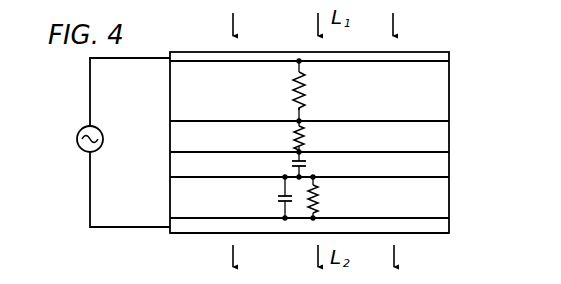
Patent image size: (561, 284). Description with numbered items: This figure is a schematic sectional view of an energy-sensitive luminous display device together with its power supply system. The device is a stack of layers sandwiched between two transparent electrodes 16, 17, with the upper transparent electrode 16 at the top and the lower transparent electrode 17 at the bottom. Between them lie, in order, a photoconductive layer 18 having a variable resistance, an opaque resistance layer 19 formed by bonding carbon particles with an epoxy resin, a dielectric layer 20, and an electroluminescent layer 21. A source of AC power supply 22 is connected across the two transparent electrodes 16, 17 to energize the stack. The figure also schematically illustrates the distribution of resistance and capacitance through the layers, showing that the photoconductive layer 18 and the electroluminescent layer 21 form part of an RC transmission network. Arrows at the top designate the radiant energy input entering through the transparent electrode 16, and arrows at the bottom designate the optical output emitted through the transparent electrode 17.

The transparent electrode 16 is at (449, 53).
The transparent electrode 17 is at (449, 226).
The photoconductive layer 18 is at (445, 87).
The opaque resistance layer 19 is at (445, 132).
The dielectric layer 20 is at (445, 163).
The electroluminescent layer 21 is at (445, 198).
The source of AC power supply 22 is at (77, 130).